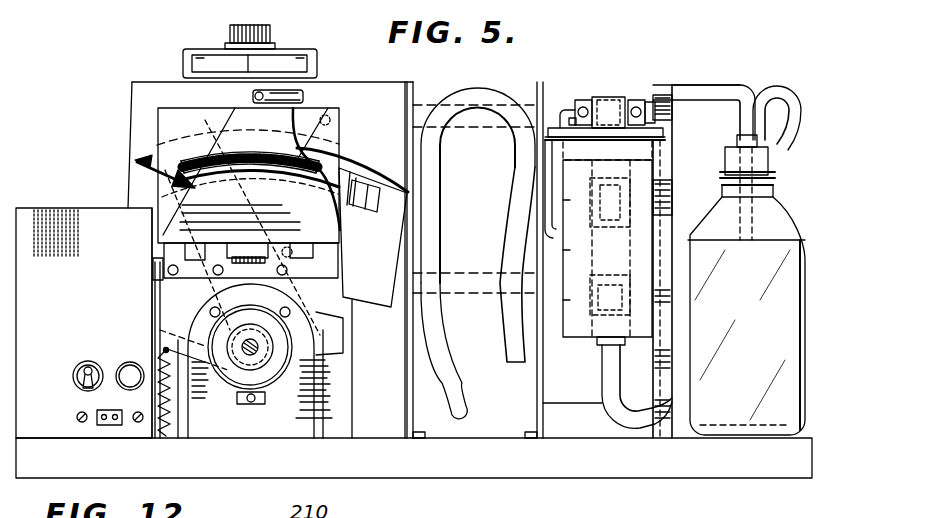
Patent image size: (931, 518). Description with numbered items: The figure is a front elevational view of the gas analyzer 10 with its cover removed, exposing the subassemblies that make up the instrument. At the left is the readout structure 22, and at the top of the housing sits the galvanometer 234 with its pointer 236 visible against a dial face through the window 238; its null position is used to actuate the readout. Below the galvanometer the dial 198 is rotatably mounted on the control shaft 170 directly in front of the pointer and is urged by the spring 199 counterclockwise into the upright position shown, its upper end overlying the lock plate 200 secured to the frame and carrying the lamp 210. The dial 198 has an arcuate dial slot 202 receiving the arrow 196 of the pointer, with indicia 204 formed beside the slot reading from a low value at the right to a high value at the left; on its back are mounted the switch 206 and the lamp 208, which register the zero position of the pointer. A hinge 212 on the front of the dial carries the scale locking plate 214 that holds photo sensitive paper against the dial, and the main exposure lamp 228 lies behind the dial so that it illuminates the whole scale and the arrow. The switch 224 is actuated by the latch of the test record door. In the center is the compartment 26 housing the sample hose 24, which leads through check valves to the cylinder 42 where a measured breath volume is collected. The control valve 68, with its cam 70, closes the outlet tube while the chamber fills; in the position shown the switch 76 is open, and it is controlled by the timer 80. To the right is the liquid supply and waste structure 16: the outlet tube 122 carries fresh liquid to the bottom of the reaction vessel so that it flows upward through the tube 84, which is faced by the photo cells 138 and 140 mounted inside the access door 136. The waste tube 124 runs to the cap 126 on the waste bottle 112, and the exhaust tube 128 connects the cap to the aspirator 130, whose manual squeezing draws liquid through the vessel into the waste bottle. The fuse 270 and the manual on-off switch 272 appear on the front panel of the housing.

The gas analyzer 10 is at (547, 78).
The liquid supply and waste structure 16 is at (768, 440).
The readout structure 22 is at (130, 125).
The sample hose 24 is at (445, 355).
The compartment 26 is at (488, 228).
The cylinder 42 is at (481, 124).
The control valve 68 is at (599, 94).
The cam 70 is at (604, 118).
The switch 76 is at (563, 110).
The timer 80 is at (572, 150).
The tube 84 is at (625, 328).
The waste bottle 112 is at (708, 425).
The outlet tube 122 is at (625, 430).
The waste tube 124 is at (710, 63).
The cap 126 is at (750, 157).
The exhaust tube 128 is at (778, 92).
The aspirator 130 is at (780, 173).
The access door 136 is at (586, 326).
The photo cell 138 is at (613, 228).
The photo cell 140 is at (635, 268).
The control shaft 170 is at (257, 353).
The arrow 196 is at (187, 183).
The dial 198 is at (332, 337).
The spring 199 is at (162, 402).
The lock plate 200 is at (142, 132).
The dial slot 202 is at (340, 208).
The indicia 204 is at (325, 148).
The switch 206 is at (300, 313).
The lamp 208 is at (293, 252).
The lamp 210 is at (342, 113).
The hinge 212 is at (172, 270).
The scale locking plate 214 is at (163, 192).
The switch 224 is at (300, 97).
The main exposure lamp 228 is at (350, 158).
The galvanometer 234 is at (318, 60).
The pointer 236 is at (250, 66).
The window 238 is at (213, 62).
The fuse 270 is at (133, 363).
The manual on-off switch 272 is at (87, 392).